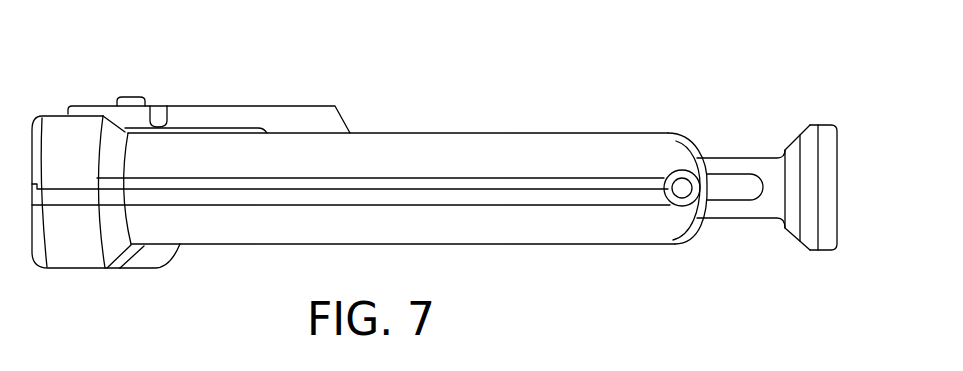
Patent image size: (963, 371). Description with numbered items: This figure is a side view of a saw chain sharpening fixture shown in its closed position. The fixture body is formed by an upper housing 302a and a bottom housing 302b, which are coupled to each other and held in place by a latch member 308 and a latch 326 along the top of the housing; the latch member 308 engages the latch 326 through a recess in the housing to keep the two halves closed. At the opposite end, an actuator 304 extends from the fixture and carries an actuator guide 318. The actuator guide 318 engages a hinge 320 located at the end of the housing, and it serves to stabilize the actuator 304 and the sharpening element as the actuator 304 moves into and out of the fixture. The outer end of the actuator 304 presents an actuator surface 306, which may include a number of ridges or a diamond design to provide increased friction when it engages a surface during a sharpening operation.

The upper housing 302a is at (560, 142).
The bottom housing 302b is at (560, 222).
The actuator 304 is at (807, 132).
The actuator surface 306 is at (827, 192).
The latch member 308 is at (132, 97).
The actuator guide 318 is at (740, 190).
The hinge 320 is at (682, 187).
The latch 326 is at (242, 106).